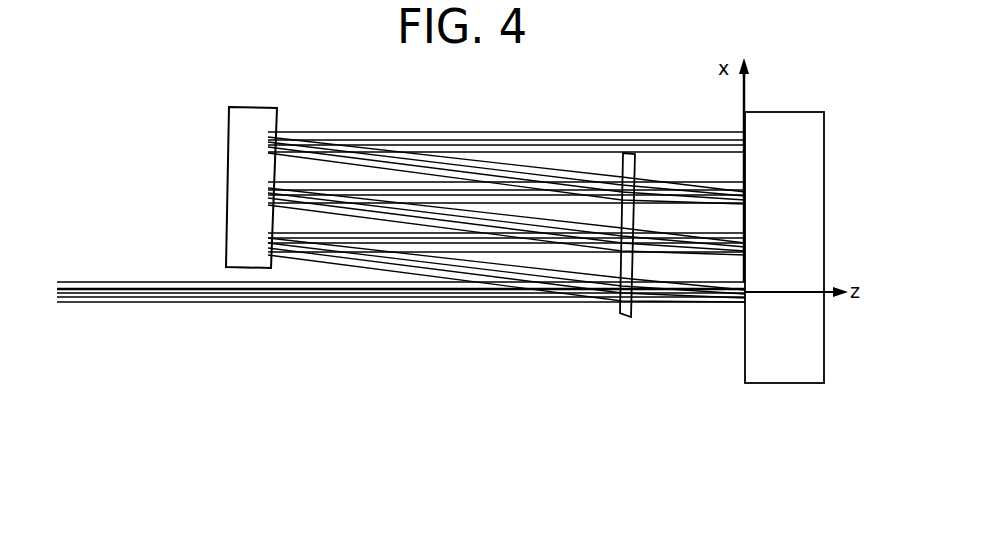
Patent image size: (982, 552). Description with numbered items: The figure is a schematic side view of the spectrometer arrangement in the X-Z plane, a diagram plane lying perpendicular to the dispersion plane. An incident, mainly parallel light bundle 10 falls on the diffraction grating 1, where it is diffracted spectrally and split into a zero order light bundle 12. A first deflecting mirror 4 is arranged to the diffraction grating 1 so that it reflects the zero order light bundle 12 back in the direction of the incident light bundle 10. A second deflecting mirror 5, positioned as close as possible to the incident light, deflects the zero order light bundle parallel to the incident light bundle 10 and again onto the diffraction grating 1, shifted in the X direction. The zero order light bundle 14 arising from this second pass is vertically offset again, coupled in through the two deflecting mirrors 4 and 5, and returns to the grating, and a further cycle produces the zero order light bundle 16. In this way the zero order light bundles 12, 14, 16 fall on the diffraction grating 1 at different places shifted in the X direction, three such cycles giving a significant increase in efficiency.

The diffraction grating 1 is at (784, 232).
The first deflecting mirror 4 is at (250, 164).
The second deflecting mirror 5 is at (617, 254).
The incident light bundle 10 is at (845, 335).
The zero order light bundle 12 is at (743, 242).
The zero order of diffraction 14 is at (722, 203).
The zero order light bundle 16 is at (747, 138).